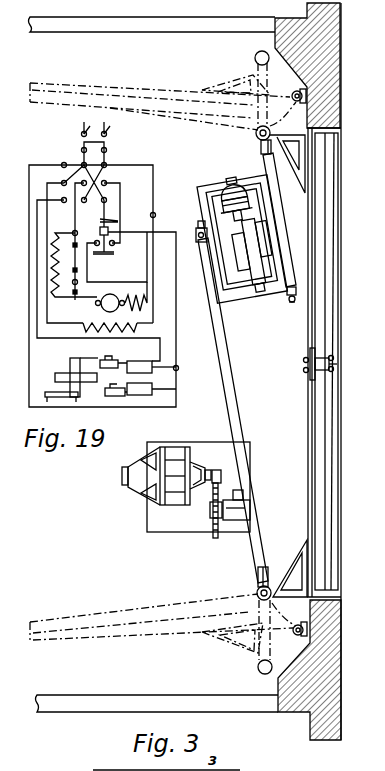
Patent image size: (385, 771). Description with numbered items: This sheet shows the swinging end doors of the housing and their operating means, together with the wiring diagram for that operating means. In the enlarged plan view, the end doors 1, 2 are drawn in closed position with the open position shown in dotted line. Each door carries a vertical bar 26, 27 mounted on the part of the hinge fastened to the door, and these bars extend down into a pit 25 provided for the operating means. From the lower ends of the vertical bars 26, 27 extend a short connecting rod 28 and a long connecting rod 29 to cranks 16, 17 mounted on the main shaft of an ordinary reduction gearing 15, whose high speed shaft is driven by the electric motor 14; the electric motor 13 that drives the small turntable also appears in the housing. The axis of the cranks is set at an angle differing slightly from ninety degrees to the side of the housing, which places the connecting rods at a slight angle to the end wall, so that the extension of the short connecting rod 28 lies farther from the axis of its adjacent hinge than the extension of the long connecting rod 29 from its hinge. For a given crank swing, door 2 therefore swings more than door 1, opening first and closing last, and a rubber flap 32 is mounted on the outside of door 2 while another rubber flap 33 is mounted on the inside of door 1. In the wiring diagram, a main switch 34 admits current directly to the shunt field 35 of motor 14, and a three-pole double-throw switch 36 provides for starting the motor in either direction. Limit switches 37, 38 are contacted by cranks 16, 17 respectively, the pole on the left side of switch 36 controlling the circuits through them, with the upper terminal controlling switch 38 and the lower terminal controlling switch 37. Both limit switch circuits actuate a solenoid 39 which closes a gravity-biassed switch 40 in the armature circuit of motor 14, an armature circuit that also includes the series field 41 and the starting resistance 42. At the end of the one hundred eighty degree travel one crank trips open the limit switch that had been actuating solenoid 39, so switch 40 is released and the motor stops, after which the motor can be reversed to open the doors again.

In FIG. 3, the end door 1 is at (314, 225).
In FIG. 3, the end door 2 is at (313, 441).
In FIG. 3, the electric motor 13 is at (173, 505).
In FIG. 3, the electric motor 14 is at (222, 196).
In FIG. 19, the electric motor 14 is at (101, 297).
In FIG. 3, the reduction gearing 15 is at (250, 302).
In FIG. 3, the crank 16 is at (202, 228).
In FIG. 19, the crank 16 is at (76, 397).
In FIG. 3, the crank 17 is at (290, 303).
In FIG. 19, the crank 17 is at (85, 358).
In FIG. 3, the pit 25 is at (168, 356).
In FIG. 3, the vertical bar 26 is at (256, 140).
In FIG. 3, the vertical bar 27 is at (258, 590).
In FIG. 3, the short connecting rod 28 is at (265, 169).
In FIG. 3, the long connecting rod 29 is at (232, 362).
In FIG. 3, the rubber flap 32 is at (309, 364).
In FIG. 3, the rubber flap 33 is at (333, 368).
In FIG. 19, the main switch 34 is at (108, 133).
In FIG. 19, the shunt field 35 is at (82, 325).
In FIG. 19, the three-pole double-throw switch 36 is at (69, 160).
In FIG. 19, the limit switch 37 is at (153, 359).
In FIG. 19, the limit switch 38 is at (140, 396).
In FIG. 19, the solenoid 39 is at (100, 221).
In FIG. 19, the gravity-biassed switch 40 is at (109, 254).
In FIG. 19, the series field 41 is at (135, 296).
In FIG. 19, the starting resistance 42 is at (55, 298).